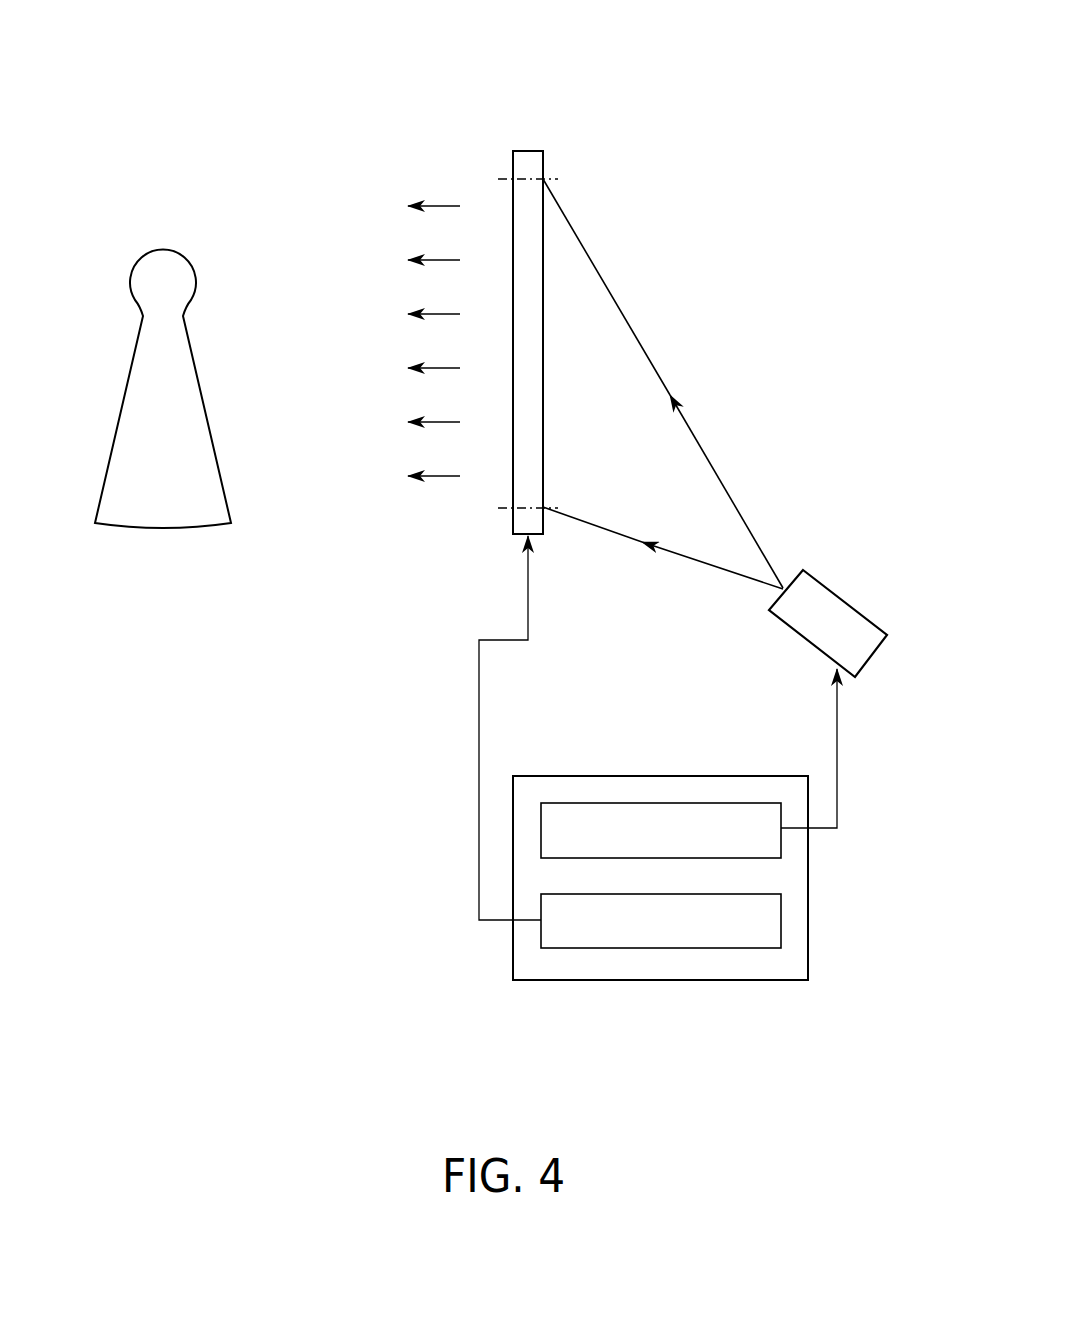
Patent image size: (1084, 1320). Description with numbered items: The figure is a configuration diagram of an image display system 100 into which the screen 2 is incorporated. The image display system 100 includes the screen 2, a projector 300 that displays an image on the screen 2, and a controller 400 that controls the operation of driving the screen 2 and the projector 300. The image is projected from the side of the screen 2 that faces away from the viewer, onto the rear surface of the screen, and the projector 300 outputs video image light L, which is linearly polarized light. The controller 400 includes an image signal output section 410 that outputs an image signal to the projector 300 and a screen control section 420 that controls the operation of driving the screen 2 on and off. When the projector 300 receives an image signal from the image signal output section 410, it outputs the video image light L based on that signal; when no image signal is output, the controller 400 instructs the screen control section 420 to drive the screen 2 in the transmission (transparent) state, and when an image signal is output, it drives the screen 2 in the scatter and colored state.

The screen 2 is at (529, 149).
The video image light L is at (633, 322).
The image display system 100 is at (769, 357).
The projector 300 is at (835, 615).
The controller 400 is at (658, 808).
The image signal output section 410 is at (580, 803).
The screen control section 420 is at (741, 950).